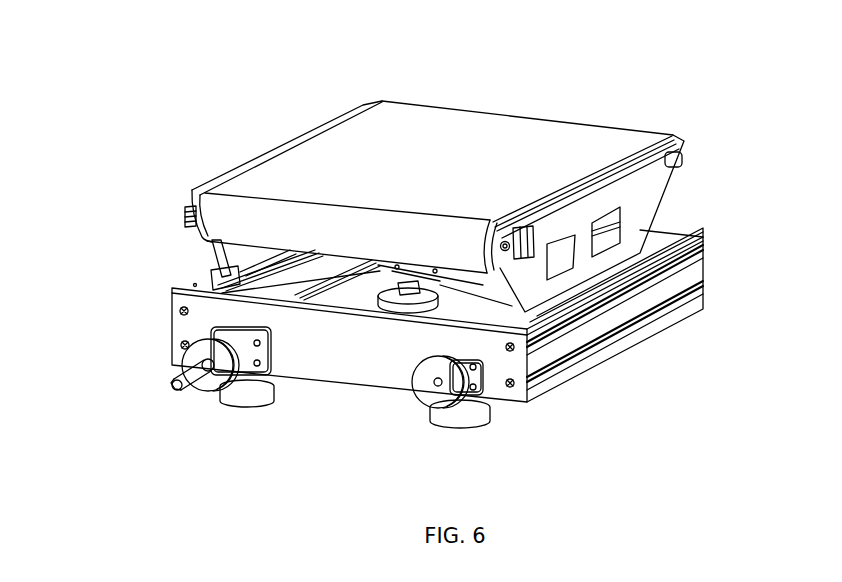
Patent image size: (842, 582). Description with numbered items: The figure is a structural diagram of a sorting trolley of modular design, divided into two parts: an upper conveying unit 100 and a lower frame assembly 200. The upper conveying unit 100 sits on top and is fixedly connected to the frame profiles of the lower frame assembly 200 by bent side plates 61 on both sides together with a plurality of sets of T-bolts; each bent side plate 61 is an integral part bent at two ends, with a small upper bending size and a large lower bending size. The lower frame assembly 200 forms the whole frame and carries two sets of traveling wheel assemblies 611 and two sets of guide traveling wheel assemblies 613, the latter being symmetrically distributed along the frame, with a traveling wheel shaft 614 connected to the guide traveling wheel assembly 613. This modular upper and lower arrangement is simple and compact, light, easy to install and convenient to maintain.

The upper conveying unit 100 is at (471, 152).
The bent side plate 61 is at (637, 210).
The lower frame assembly 200 is at (599, 332).
The traveling wheel assembly 611 is at (435, 392).
The guide traveling wheel assembly 613 is at (215, 382).
The traveling wheel shaft 614 is at (173, 385).